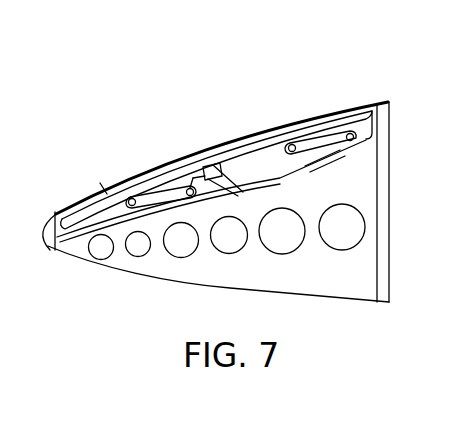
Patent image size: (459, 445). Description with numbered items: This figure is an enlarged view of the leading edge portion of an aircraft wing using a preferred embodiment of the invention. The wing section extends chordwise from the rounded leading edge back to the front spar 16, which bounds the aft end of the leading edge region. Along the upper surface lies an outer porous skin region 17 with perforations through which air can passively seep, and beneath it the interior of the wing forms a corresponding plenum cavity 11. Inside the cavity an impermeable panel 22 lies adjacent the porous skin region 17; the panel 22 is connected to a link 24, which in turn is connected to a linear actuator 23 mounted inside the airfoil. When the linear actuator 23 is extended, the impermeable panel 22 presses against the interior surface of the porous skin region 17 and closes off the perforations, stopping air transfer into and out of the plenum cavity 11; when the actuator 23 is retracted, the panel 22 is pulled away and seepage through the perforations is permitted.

The plenum cavity 11 is at (236, 140).
The front spar 16 is at (385, 130).
The outer porous skin region 17 is at (265, 125).
The impermeable panel 22 is at (100, 188).
The linear actuator 23 is at (185, 165).
The link 24 is at (140, 190).